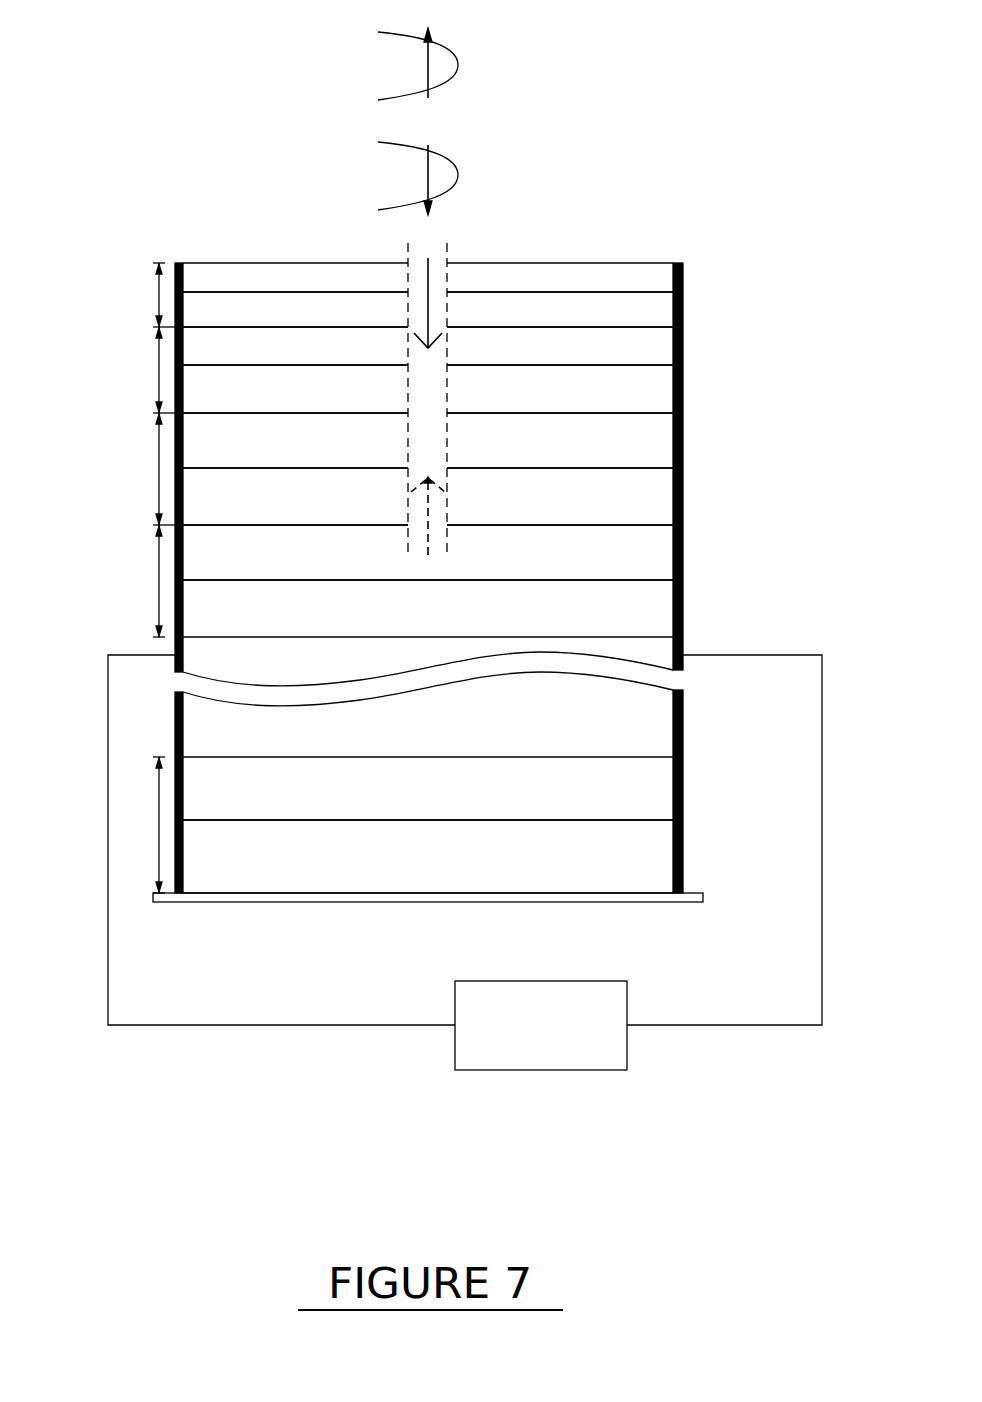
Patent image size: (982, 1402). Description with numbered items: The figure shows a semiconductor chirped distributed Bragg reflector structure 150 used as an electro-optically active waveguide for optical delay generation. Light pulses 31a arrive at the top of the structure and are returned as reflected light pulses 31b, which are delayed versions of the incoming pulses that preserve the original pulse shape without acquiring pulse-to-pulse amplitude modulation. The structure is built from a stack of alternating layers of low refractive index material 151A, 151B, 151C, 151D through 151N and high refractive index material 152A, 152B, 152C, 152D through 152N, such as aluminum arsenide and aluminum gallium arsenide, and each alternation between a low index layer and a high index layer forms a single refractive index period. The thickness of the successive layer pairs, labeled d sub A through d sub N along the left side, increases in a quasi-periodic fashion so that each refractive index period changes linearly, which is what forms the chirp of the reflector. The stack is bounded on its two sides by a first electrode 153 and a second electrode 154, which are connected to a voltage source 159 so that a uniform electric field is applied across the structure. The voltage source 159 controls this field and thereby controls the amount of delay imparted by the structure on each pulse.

The electro-optic device 150 is at (185, 83).
The light pulses 31a is at (458, 172).
The reflected light pulses 31b is at (458, 62).
The low refractive index material layer 151A is at (662, 281).
The high refractive index material layer 152A is at (662, 319).
The low refractive index material layer 151B is at (662, 351).
The high refractive index material layer 152B is at (662, 396).
The low refractive index material layer 151C is at (662, 444).
The high refractive index material layer 152C is at (662, 504).
The low refractive index material layer 151D is at (662, 557).
The high refractive index material layer 152D is at (662, 616).
The low refractive index material layer 151N is at (662, 800).
The high refractive index material layer 152N is at (662, 865).
The first electrode 153 is at (683, 640).
The second electrode 154 is at (173, 647).
The voltage source 159 is at (577, 1070).